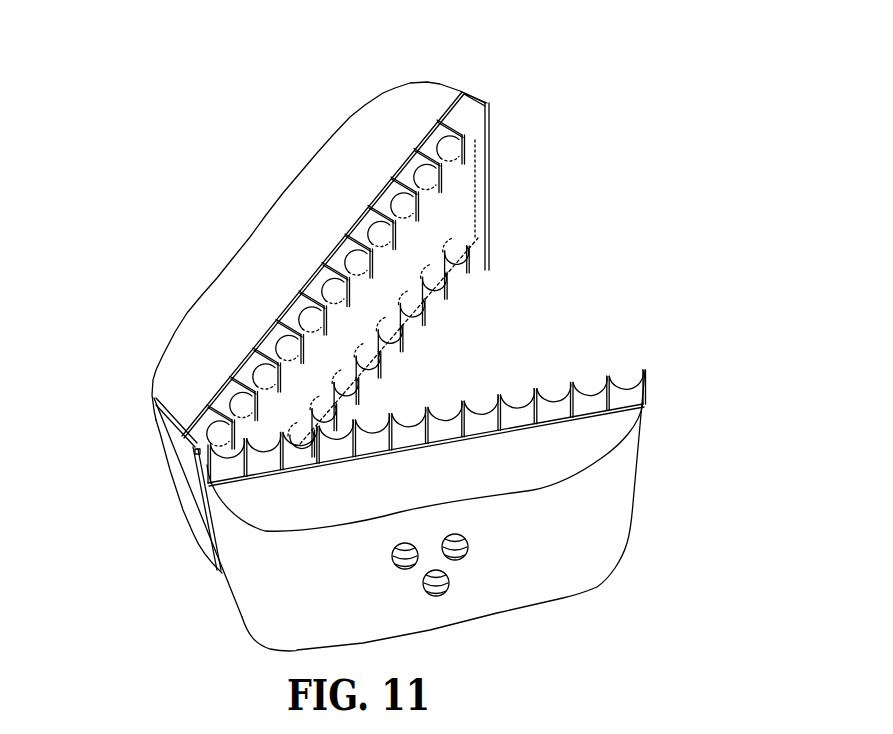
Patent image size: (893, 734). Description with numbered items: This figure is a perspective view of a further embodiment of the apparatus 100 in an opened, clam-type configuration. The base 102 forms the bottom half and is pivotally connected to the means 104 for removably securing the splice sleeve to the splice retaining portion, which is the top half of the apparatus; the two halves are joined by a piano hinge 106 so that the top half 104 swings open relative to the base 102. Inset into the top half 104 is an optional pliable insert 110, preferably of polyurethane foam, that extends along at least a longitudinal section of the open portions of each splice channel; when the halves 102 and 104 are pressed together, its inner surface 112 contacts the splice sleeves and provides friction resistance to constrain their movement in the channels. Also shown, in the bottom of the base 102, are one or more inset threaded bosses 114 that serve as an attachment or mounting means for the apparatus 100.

The apparatus 100 is at (667, 125).
The base 102 is at (240, 620).
The means for removably securing the splice sleeve to the splice retaining portion 104 is at (187, 320).
The piano hinge 106 is at (195, 452).
The pliable insert 110 is at (471, 214).
The inner surface 112 is at (449, 252).
The inset threaded bosses 114 is at (418, 559).